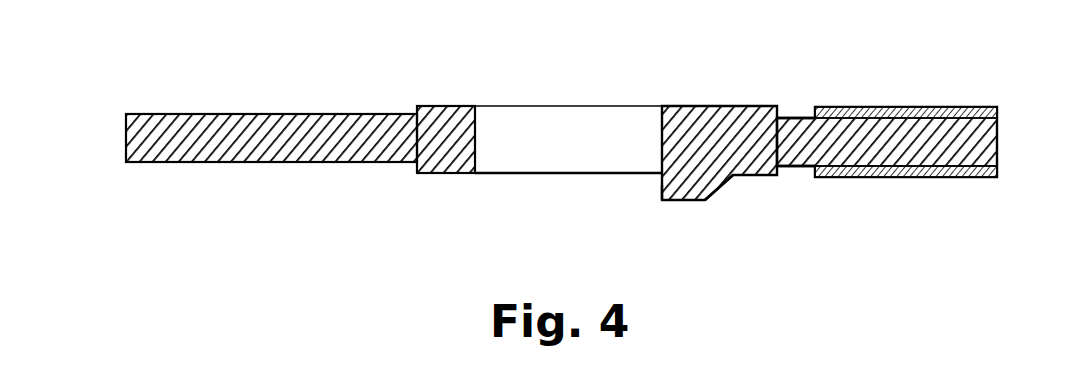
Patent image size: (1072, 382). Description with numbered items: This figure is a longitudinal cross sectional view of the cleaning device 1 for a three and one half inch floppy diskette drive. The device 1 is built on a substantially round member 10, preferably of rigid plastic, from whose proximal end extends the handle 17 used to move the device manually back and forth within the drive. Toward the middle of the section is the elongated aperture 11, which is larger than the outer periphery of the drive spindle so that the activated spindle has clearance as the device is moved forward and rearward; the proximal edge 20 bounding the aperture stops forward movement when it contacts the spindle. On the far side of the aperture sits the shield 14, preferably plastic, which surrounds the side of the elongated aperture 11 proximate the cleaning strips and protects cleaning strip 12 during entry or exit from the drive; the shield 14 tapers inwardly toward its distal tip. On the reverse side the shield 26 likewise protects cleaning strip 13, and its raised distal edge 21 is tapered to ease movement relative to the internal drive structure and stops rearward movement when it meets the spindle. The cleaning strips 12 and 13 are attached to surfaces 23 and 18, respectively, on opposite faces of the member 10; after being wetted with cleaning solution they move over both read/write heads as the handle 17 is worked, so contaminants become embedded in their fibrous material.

The device 1 is at (240, 163).
The handle 17 is at (215, 113).
The proximal edge 20 is at (486, 108).
The elongated aperture 11 is at (598, 137).
The shield 14 is at (720, 106).
The raised distal edge 21 is at (663, 191).
The shield 26 is at (757, 177).
The substantially round member 10 is at (1000, 136).
The cleaning strip 12 is at (975, 107).
The cleaning strip 13 is at (960, 178).
The surface 23 is at (792, 118).
The reverse side surface 18 is at (792, 168).